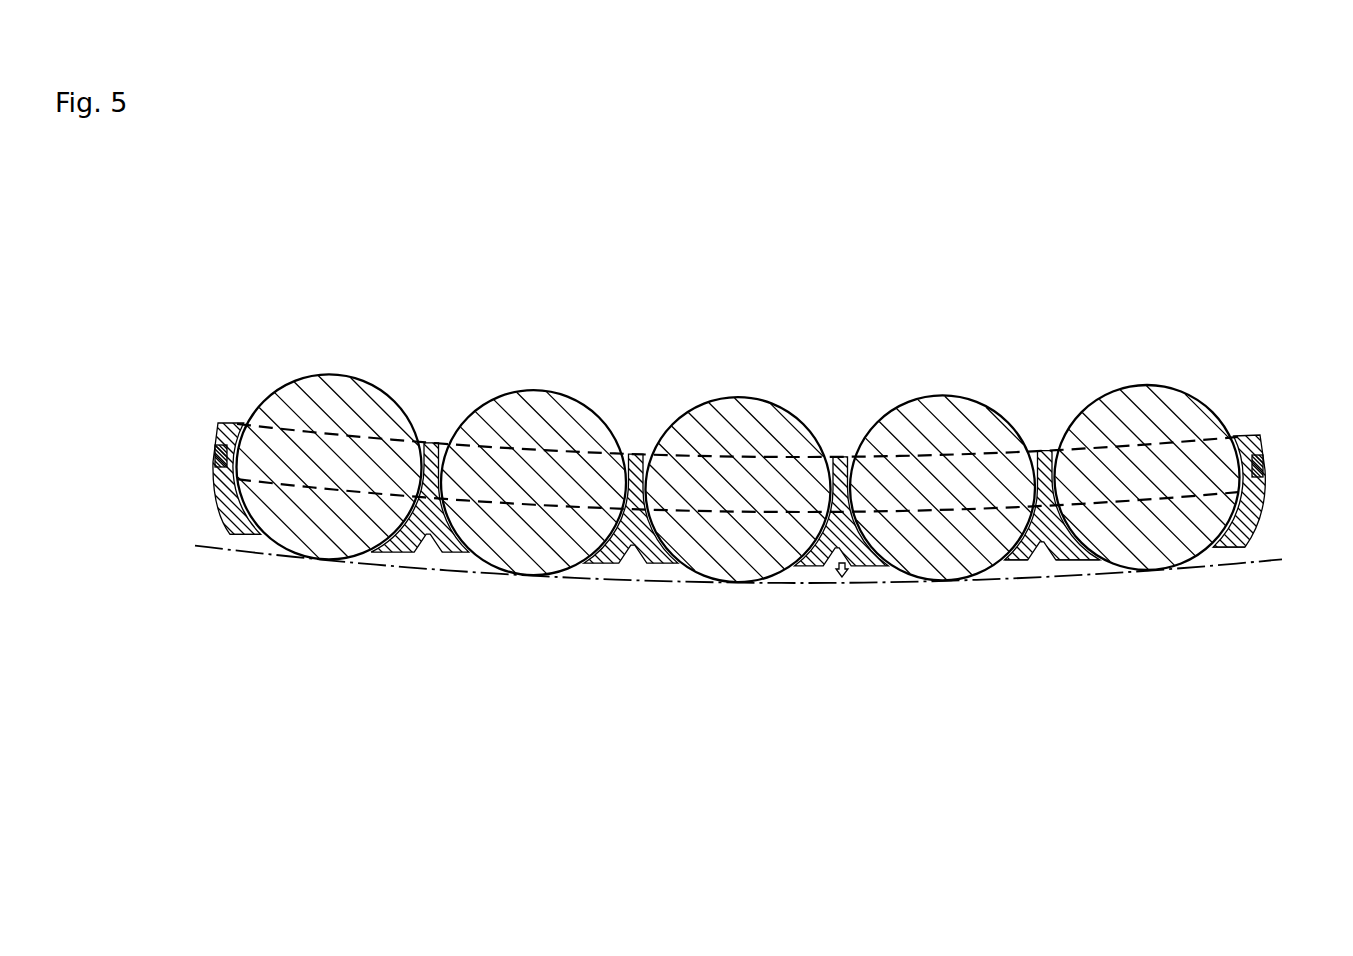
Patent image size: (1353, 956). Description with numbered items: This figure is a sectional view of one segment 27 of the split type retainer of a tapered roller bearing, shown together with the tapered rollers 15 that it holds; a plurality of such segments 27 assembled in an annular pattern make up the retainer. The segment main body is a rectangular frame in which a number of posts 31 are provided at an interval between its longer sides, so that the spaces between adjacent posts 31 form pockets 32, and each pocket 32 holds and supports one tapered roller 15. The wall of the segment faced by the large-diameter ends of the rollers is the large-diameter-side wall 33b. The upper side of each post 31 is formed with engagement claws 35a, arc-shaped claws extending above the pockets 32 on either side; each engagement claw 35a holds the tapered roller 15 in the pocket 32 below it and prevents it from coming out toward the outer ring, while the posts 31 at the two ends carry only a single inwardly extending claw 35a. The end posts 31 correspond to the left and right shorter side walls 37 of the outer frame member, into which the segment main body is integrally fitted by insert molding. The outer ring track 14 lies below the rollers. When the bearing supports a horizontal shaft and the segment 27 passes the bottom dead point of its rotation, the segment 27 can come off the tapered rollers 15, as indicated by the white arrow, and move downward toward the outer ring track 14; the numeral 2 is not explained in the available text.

The cage 2 is at (1249, 424).
The outer ring track 14 is at (652, 582).
The tapered rollers 15 is at (1133, 553).
The segment 27 is at (638, 445).
The posts 31 is at (218, 433).
The pockets 32 is at (857, 528).
The large-diameter-side wall 33b is at (732, 455).
The engagement claws 35a is at (253, 541).
The shorter side walls 37 is at (215, 457).